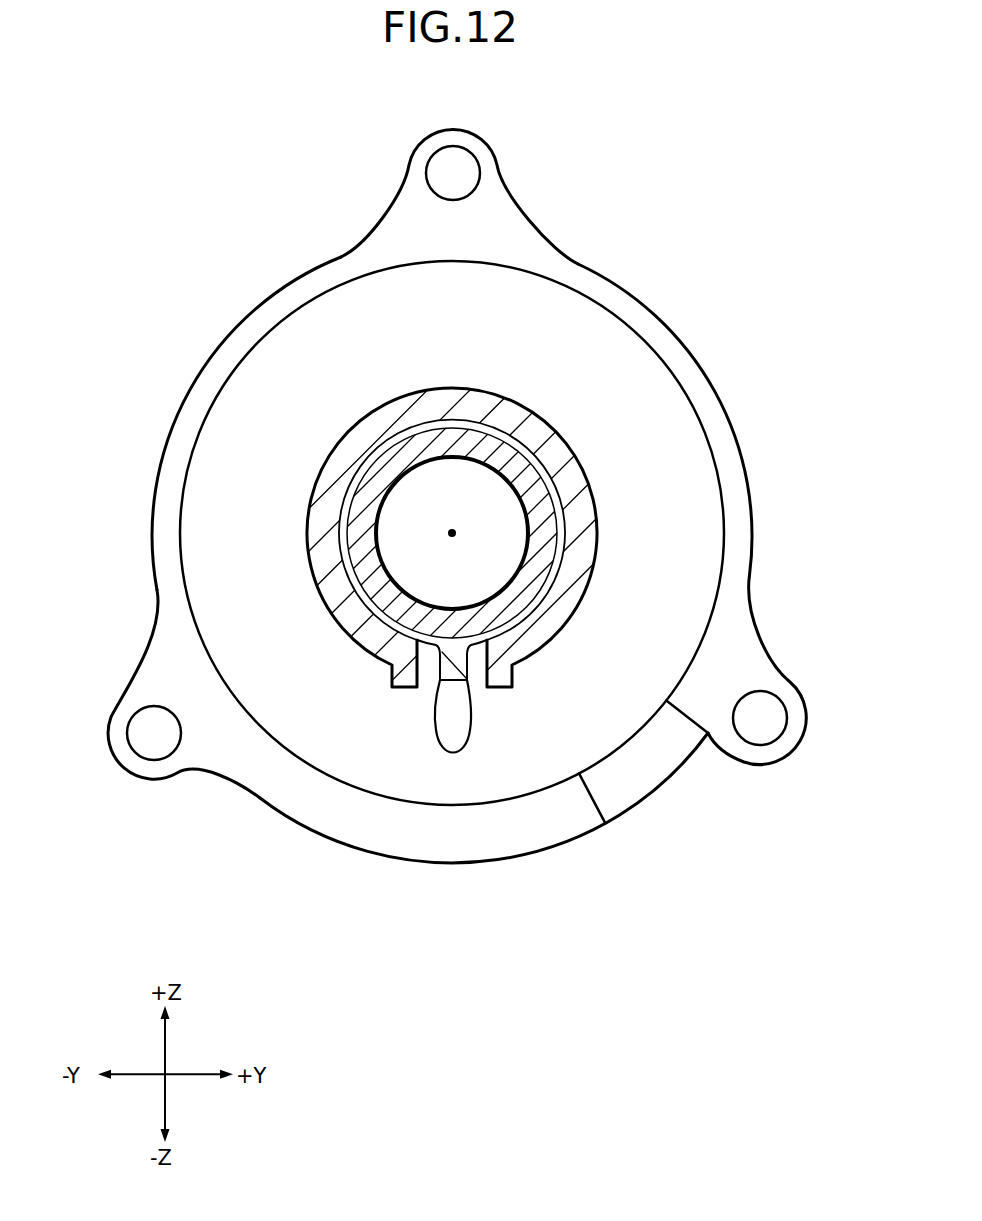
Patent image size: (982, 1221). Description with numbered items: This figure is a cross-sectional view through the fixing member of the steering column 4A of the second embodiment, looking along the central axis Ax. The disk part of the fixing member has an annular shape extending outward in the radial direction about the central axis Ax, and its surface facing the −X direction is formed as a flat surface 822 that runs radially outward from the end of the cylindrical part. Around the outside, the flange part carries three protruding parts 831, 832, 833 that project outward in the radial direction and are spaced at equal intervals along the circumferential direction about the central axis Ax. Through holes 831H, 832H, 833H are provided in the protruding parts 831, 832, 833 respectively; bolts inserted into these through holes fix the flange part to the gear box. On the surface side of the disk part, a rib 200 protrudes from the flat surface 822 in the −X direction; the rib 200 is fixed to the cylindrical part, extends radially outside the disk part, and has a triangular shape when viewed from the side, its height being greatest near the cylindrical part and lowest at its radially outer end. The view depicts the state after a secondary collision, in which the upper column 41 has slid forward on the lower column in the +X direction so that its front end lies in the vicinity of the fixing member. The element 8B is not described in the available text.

The steering column 4A is at (731, 217).
The upper column 41 is at (323, 509).
The bearing 8B is at (550, 520).
The rib 200 is at (447, 665).
The flat surface 822 is at (318, 412).
The protruding part 831 is at (493, 222).
The protruding part 832 is at (153, 690).
The protruding part 833 is at (772, 683).
The through hole 831H is at (455, 160).
The through hole 832H is at (150, 740).
The through hole 833H is at (769, 731).
The central axis Ax is at (453, 530).